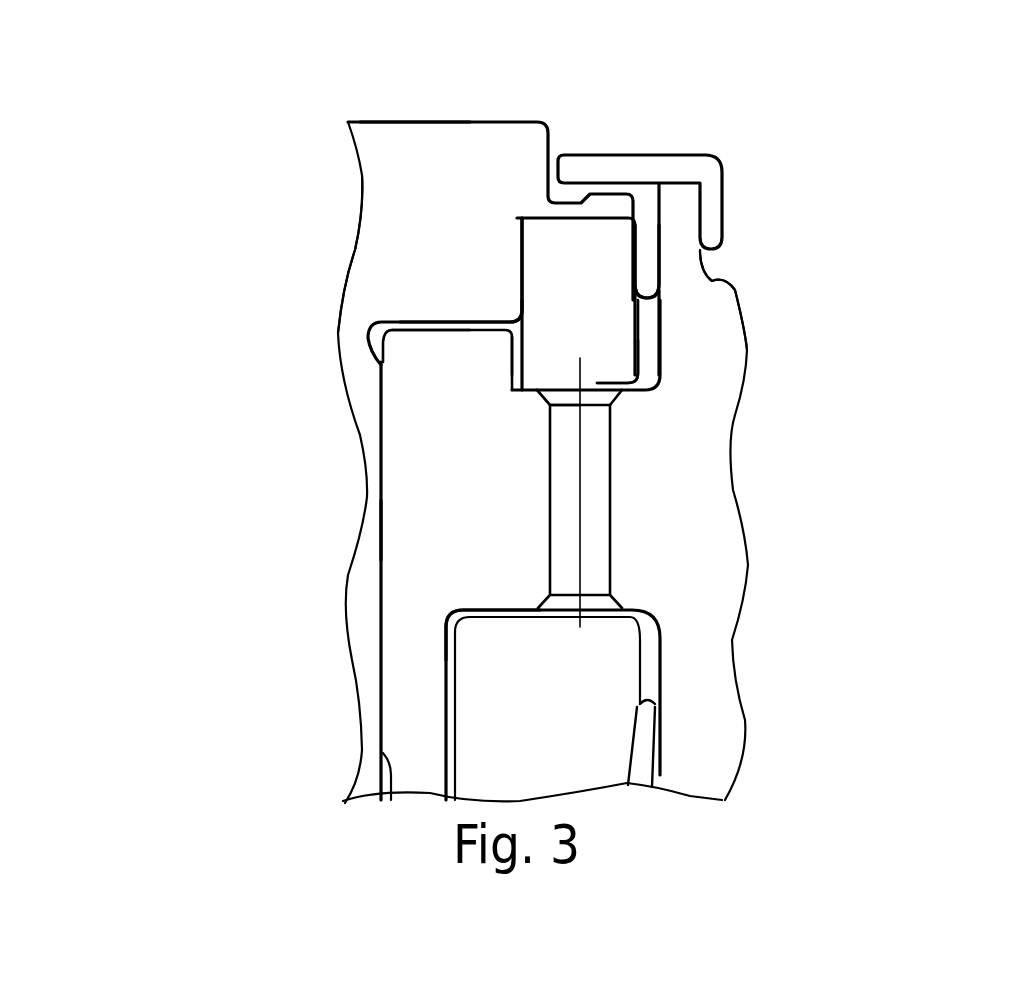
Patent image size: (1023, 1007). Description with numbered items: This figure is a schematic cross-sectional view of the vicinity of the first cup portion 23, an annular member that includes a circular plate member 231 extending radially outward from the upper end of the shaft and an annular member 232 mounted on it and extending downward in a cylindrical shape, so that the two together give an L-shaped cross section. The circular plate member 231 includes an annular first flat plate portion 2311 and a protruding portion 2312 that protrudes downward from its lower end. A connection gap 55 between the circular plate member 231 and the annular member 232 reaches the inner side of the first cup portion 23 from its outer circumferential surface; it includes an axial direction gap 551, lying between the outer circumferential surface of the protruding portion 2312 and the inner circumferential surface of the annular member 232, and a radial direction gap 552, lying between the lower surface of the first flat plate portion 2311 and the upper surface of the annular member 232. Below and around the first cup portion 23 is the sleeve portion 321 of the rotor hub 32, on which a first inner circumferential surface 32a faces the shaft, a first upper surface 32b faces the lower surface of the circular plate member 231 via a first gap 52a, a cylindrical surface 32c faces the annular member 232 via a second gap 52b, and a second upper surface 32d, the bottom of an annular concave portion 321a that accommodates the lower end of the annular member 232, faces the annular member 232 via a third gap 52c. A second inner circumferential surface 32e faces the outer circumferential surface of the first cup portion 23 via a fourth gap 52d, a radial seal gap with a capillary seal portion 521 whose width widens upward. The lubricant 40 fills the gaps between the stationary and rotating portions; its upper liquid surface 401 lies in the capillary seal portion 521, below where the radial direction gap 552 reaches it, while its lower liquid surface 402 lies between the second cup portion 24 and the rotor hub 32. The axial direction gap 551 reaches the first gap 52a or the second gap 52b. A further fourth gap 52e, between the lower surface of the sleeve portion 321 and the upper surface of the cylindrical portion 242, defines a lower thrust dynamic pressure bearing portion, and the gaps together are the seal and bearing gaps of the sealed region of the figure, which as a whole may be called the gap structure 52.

The first cup portion 23 is at (139, 135).
The circular plate member 231 is at (245, 151).
The first flat plate portion 2311 is at (418, 165).
The protruding portion 2312 is at (403, 257).
The annular member 232 is at (590, 282).
The connection gap 55 is at (428, 56).
The axial direction gap 551 is at (517, 260).
The radial direction gap 552 is at (553, 213).
The clip member 52 is at (555, 418).
The capillary seal portion 521 is at (648, 205).
The first gap 52a is at (420, 324).
The second gap 52b is at (504, 376).
The third gap 52c is at (611, 367).
The fourth gap 52d is at (651, 239).
The fourth gap 52e is at (496, 629).
The rotor hub 32 is at (179, 486).
The sleeve portion 321 is at (423, 488).
The annular concave portion 321a is at (577, 401).
The first inner circumferential surface 32a is at (378, 528).
The first upper surface 32b is at (430, 331).
The cylindrical surface 32c is at (501, 366).
The second upper surface 32d is at (613, 400).
The second inner circumferential surface 32e is at (697, 261).
The lubricant 40 is at (593, 502).
The upper liquid surface 401 is at (660, 307).
The lower liquid surface 402 is at (657, 703).
The second cup portion 24 is at (978, 638).
The cylindrical portion 242 is at (603, 680).